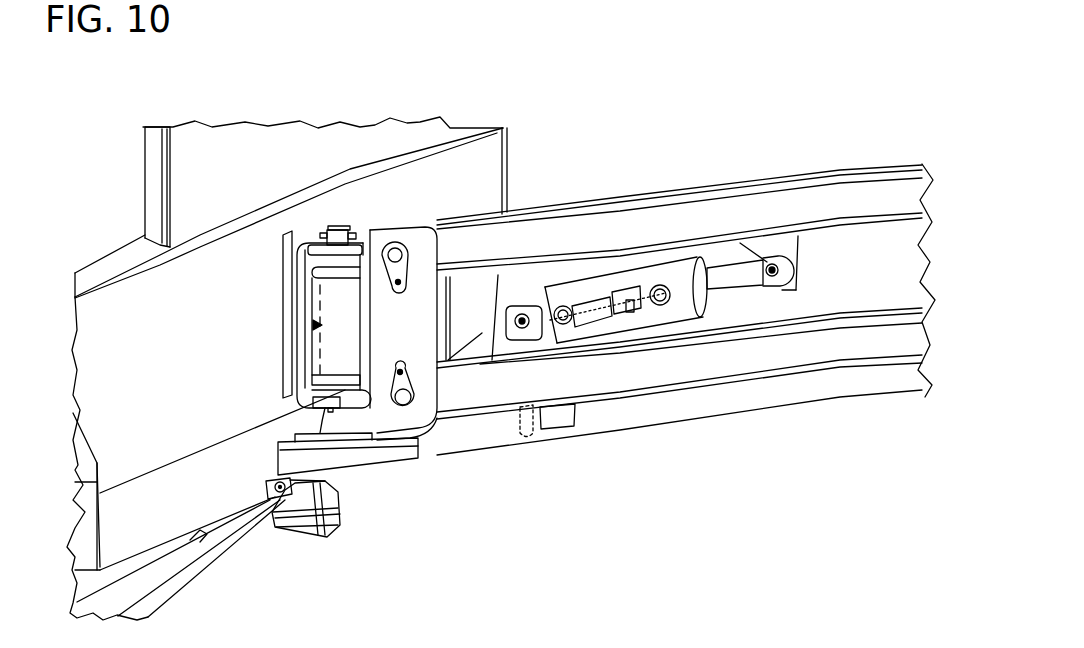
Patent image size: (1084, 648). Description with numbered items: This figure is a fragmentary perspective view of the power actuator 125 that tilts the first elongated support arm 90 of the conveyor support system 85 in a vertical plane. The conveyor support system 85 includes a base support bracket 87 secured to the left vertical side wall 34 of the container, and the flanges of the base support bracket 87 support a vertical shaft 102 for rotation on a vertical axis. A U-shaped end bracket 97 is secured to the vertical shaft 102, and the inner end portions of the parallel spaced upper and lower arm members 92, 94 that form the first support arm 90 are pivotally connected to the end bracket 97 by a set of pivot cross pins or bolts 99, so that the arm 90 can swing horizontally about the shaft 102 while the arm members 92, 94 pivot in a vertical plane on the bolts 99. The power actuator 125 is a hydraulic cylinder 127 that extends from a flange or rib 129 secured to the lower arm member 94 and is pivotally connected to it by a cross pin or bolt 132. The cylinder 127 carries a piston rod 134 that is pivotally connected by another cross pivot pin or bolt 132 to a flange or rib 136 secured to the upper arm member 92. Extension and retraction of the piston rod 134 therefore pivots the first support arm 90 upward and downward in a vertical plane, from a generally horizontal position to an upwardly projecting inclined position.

The left vertical side wall 34 is at (202, 338).
The conveyor support system 85 is at (786, 420).
The base support bracket 87 is at (292, 340).
The first elongated support arm 90 is at (797, 166).
The upper arm member 92 is at (737, 210).
The lower arm member 94 is at (585, 380).
The U-shaped end bracket 97 is at (403, 323).
The pivot cross pins or bolts 99 is at (398, 253).
The vertical shaft 102 is at (338, 226).
The power actuator 125 is at (687, 330).
The hydraulic cylinder 127 is at (634, 280).
The flange or rib 129 is at (522, 347).
The cross pin or bolt 132 is at (525, 318).
The piston rod 134 is at (716, 287).
The flange or rib 136 is at (773, 245).